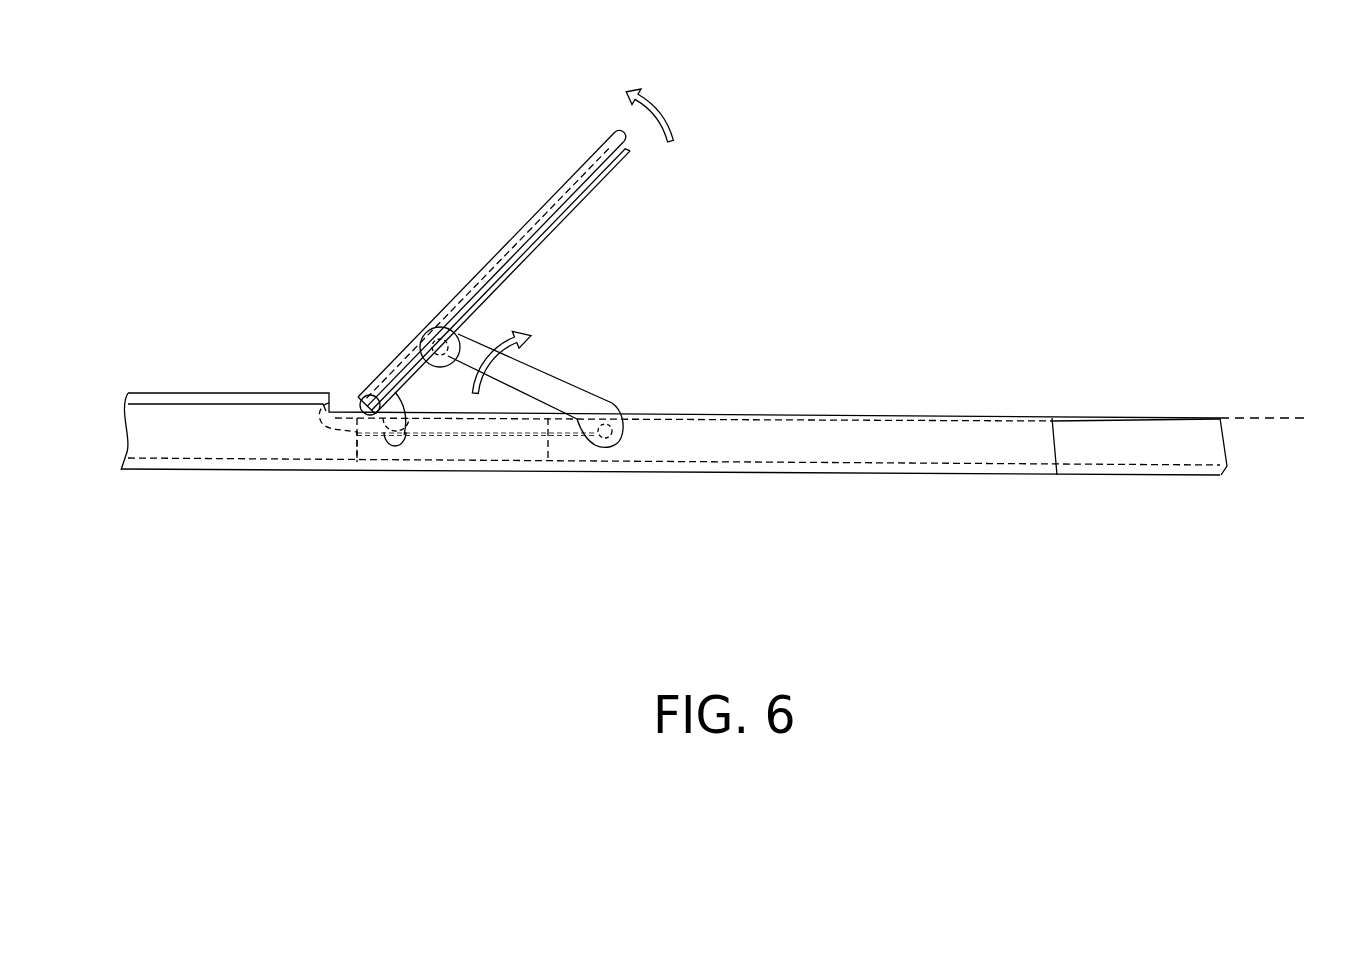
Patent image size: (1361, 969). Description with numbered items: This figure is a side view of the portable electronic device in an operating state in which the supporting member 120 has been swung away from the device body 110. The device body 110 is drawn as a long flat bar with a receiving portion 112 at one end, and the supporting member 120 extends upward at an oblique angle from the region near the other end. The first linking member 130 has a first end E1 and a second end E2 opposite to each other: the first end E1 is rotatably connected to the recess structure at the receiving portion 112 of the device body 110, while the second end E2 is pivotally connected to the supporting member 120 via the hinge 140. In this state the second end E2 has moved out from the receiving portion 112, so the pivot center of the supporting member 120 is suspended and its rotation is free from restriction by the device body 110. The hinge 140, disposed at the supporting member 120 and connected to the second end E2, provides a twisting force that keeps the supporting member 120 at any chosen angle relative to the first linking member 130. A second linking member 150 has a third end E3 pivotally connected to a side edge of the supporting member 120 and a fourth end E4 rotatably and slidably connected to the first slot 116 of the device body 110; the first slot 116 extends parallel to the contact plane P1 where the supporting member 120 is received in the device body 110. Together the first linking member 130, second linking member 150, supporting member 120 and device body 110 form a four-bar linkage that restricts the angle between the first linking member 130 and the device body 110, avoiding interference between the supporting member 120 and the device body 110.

The device body 110 is at (185, 430).
The receiving portion 112 is at (1115, 415).
The first slot 116 is at (502, 441).
The supporting member 120 is at (590, 155).
The first linking member 130 is at (572, 398).
The hinge 140 is at (449, 327).
The second linking member 150 is at (402, 388).
The first end E1 is at (618, 444).
The second end E2 is at (460, 332).
The third end E3 is at (358, 398).
The fourth end E4 is at (395, 446).
The contact plane P1 is at (1285, 426).